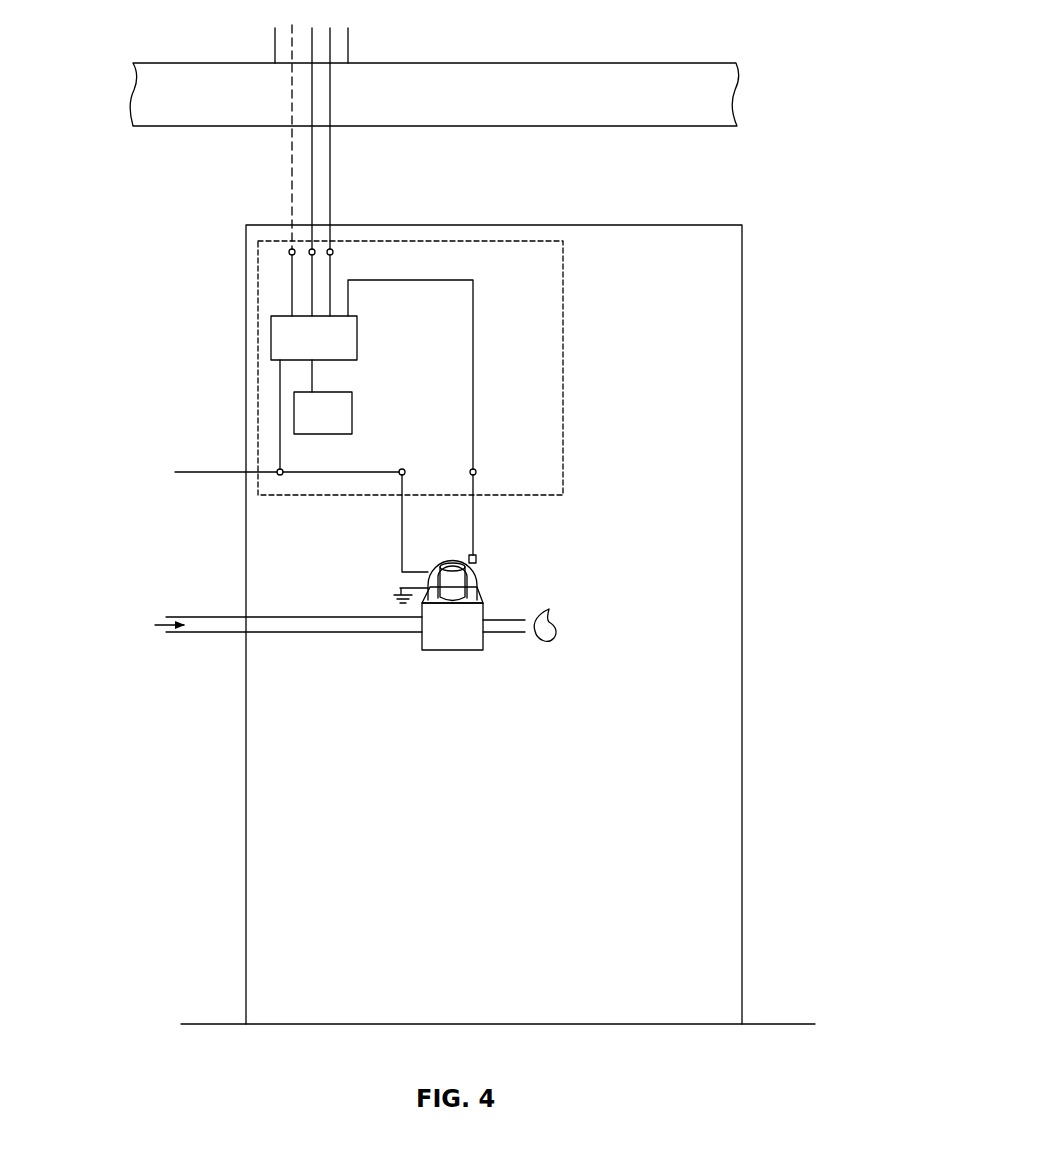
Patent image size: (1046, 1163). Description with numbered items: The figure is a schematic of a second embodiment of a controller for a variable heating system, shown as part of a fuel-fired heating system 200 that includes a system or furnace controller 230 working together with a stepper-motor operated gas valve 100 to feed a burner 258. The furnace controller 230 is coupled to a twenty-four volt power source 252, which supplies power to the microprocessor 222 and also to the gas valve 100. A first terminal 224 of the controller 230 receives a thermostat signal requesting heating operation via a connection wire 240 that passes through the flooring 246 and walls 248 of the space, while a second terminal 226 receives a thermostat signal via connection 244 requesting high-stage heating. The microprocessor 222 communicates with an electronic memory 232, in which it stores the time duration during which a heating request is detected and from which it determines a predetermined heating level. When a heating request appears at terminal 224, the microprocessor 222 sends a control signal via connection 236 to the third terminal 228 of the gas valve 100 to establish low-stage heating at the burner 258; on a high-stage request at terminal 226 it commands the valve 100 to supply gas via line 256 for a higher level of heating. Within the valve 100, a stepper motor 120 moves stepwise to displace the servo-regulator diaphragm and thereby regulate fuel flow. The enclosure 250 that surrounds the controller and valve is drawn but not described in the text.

The stepper-motor operated gas valve 100 is at (484, 611).
The stepper motor 120 is at (476, 580).
The fuel-fired heating system 200 is at (112, 478).
The microprocessor 222 is at (271, 345).
The first terminal 224 is at (310, 255).
The second terminal 226 is at (290, 250).
The third terminal 228 is at (477, 561).
The system or furnace controller 230 is at (256, 389).
The electronic memory 232 is at (353, 405).
The control signal connection 236 is at (475, 434).
The connection wire 240 is at (312, 133).
The thermostat signal connection 244 is at (293, 153).
The flooring 246 is at (408, 126).
The walls 248 is at (350, 44).
The enclosure cabinet 250 is at (246, 745).
The 24-volt power source 252 is at (218, 473).
The gas line 256 is at (225, 617).
The burner 258 is at (560, 635).